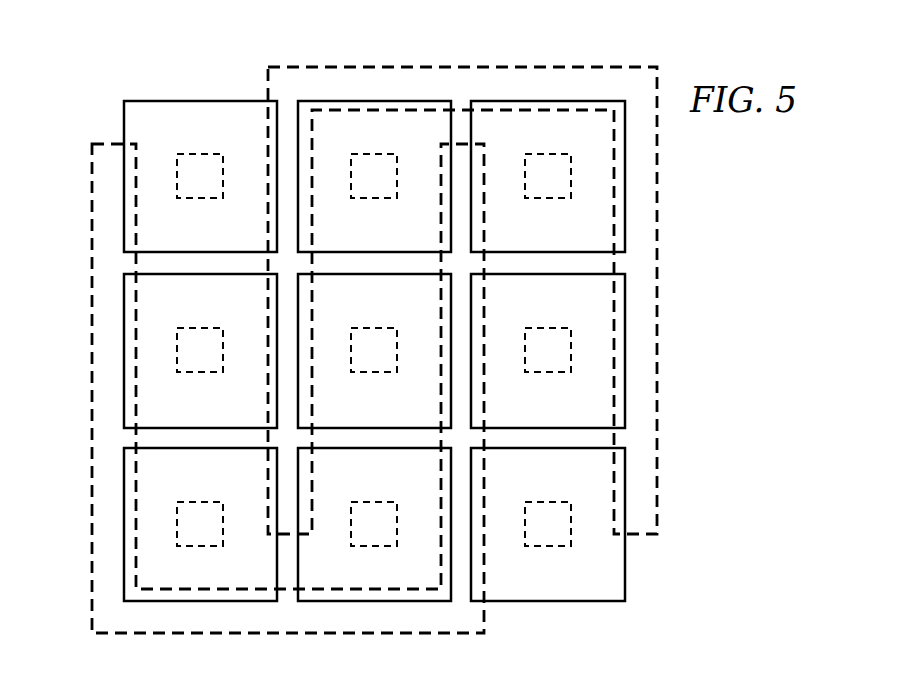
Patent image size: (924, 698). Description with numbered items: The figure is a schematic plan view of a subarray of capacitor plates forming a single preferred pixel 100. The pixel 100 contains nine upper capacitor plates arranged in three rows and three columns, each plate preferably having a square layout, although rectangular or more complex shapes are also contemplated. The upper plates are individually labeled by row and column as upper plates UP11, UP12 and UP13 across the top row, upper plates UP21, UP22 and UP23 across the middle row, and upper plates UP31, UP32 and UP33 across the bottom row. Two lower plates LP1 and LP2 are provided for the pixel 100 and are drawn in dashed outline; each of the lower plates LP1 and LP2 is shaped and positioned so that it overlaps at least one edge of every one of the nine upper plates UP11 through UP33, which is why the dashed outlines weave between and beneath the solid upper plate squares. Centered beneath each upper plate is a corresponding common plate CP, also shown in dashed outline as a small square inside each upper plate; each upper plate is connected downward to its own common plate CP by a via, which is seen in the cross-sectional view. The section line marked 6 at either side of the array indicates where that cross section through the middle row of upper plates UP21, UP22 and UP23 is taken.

The pixel 100 is at (185, 67).
The upper plate UP11 is at (200, 176).
The upper plate UP12 is at (374, 176).
The upper plate UP13 is at (548, 176).
The upper plate UP21 is at (200, 351).
The upper plate UP22 is at (374, 351).
The upper plate UP23 is at (548, 351).
The upper plate UP31 is at (200, 524).
The upper plate UP32 is at (374, 524).
The upper plate UP33 is at (548, 524).
The common plate CP is at (374, 350).
The first lower plate LP1 is at (93, 489).
The second lower plate LP2 is at (658, 196).
The section line 6- 6 is at (72, 353).